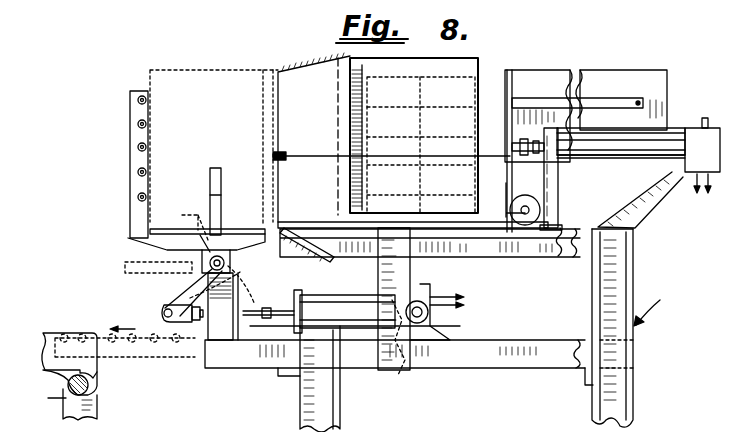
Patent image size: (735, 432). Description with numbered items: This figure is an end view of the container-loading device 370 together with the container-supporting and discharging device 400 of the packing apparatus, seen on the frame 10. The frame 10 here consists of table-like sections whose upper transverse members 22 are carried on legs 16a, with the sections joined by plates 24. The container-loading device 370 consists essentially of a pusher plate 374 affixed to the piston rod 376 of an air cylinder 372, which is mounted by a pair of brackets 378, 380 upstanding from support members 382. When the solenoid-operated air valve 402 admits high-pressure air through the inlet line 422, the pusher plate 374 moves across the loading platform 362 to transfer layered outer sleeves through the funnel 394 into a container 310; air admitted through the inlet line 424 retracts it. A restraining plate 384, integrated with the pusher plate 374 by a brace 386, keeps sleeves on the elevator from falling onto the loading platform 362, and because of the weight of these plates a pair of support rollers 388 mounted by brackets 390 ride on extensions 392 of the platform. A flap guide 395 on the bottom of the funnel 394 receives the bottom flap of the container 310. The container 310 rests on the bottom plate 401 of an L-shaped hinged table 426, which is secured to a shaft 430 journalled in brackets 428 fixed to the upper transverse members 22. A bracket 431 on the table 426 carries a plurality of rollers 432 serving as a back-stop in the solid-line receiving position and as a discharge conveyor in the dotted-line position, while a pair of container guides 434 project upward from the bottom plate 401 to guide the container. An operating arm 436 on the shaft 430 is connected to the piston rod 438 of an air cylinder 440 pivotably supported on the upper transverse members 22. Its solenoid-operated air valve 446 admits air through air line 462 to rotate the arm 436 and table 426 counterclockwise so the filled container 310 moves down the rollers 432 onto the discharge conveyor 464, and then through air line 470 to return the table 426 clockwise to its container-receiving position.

The frame 10 is at (655, 307).
The legs 16a is at (340, 417).
The upper transverse members 22 is at (570, 345).
The plates 24 is at (285, 376).
The container 310 is at (200, 70).
The loading platform 362 is at (391, 168).
The container-loading device 370 is at (482, 58).
The air cylinder 372 is at (580, 160).
The pusher plate 374 is at (510, 70).
The piston rod 376 is at (524, 156).
The bracket 378 is at (556, 196).
The bracket 380 is at (632, 226).
The support members 382 is at (602, 228).
The restraining plate 384 is at (650, 78).
The brace 386 is at (596, 96).
The support rollers 388 is at (525, 240).
The brackets 390 is at (508, 202).
The extensions 392 is at (502, 258).
The funnel 394 is at (296, 70).
The flap guide 395 is at (322, 226).
The container-supporting and discharging device 400 is at (120, 246).
The bottom plate 401 is at (236, 228).
The solenoid-operated air valve 402 is at (718, 175).
The inlet line 422 is at (668, 170).
The inlet line 424 is at (648, 128).
The hinged table 426 is at (162, 228).
The brackets 428 is at (218, 328).
The shaft 430 is at (230, 262).
The bracket 431 is at (130, 186).
The rollers 432 is at (148, 147).
The container guides 434 is at (218, 168).
The operating arm 436 is at (178, 305).
The piston rod 438 is at (250, 308).
The air cylinder 440 is at (340, 298).
The solenoid-operated air valve 446 is at (424, 298).
The air line 462 is at (296, 300).
The discharge conveyor 464 is at (98, 378).
The air line 470 is at (402, 360).